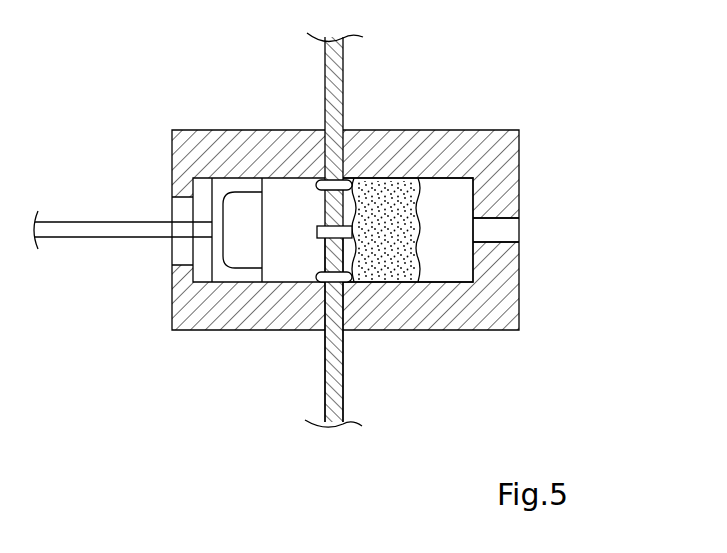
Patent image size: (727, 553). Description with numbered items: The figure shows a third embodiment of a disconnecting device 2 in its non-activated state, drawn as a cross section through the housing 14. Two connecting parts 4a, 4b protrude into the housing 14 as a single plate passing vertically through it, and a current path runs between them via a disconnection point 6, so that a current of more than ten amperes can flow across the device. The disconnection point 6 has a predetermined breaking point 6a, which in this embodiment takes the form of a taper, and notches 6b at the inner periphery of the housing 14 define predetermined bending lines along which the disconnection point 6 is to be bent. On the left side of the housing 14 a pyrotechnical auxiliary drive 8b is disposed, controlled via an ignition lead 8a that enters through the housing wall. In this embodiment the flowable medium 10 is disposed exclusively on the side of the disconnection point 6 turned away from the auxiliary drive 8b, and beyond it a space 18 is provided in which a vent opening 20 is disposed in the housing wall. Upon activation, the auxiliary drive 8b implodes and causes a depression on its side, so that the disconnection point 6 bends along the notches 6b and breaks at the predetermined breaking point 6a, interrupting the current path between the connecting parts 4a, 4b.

The disconnecting device 2 is at (524, 86).
The connecting part 4a is at (343, 63).
The connecting part 4b is at (337, 395).
The disconnection point 6 is at (293, 232).
The predetermined breaking point 6a is at (293, 310).
The notches 6b is at (317, 180).
The ignition lead 8a is at (83, 226).
The pyrotechnical auxiliary drive 8b is at (240, 188).
The flowable medium 10 is at (390, 192).
The housing 14 is at (193, 316).
The space 18 is at (452, 198).
The vent opening 20 is at (510, 230).